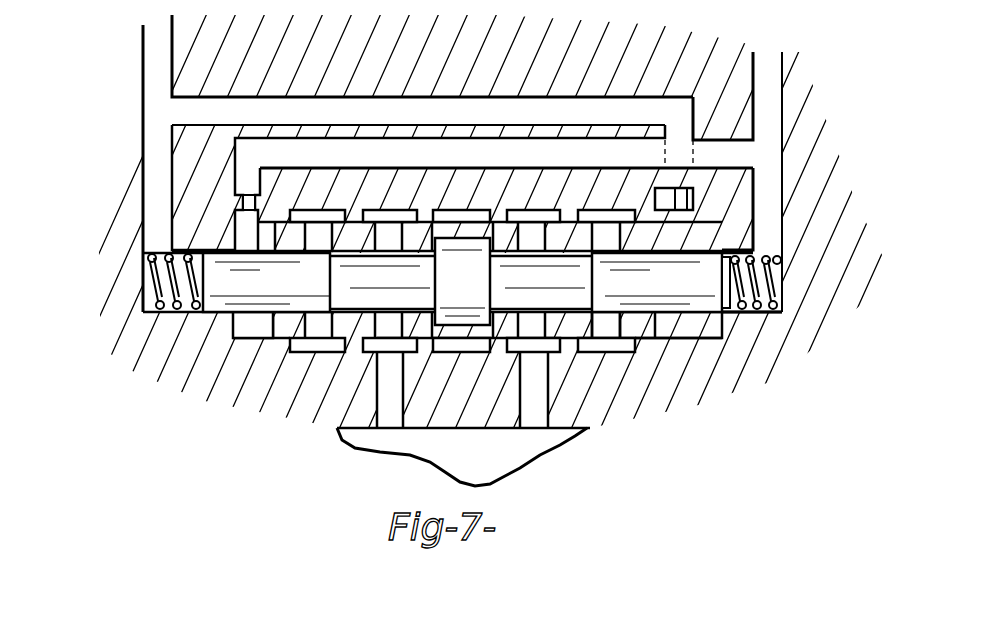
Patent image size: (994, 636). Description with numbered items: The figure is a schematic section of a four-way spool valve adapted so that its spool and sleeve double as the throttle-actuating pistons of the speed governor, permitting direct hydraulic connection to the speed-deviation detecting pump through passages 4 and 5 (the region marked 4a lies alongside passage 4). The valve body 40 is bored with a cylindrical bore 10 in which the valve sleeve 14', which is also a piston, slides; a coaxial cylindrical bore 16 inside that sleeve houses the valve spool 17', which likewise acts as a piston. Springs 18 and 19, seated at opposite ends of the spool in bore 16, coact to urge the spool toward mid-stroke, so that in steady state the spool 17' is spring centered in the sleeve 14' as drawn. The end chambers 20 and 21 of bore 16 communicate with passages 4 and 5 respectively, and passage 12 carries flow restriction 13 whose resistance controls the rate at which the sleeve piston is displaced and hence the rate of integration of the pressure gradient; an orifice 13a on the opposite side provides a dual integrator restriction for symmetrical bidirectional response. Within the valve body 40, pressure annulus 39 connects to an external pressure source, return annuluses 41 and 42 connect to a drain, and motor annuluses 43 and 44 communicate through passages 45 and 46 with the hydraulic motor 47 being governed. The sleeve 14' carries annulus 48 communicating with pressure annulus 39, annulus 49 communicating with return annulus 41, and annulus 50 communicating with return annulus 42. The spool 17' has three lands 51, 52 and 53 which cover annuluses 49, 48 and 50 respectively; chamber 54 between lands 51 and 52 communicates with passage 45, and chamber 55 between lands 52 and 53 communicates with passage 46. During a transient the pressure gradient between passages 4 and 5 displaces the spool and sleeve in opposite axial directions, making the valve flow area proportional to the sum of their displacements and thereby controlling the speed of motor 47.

The passage 4 is at (155, 50).
The housing top block 4a is at (497, 318).
The passage 5 is at (770, 82).
The cylindrical bore 10 is at (235, 340).
The passage 12 is at (630, 169).
The flow restriction 13 is at (243, 205).
The orifice 13a is at (690, 198).
The valve sleeve 14' is at (678, 345).
The cylindrical bore 16 is at (343, 428).
The valve spool 17' is at (754, 315).
The spring 18 is at (747, 312).
The spring 19 is at (140, 368).
The chamber 20 is at (782, 274).
The chamber 21 is at (140, 302).
The pressure annulus 39 is at (598, 97).
The valve body 40 is at (627, 196).
The return annulus 41 is at (430, 125).
The return annulus 42 is at (690, 92).
The motor annulus 43 is at (530, 108).
The motor annulus 44 is at (665, 62).
The passage 45 is at (392, 417).
The passage 46 is at (533, 408).
The hydraulic motor 47 is at (588, 430).
The annulus 48 is at (480, 343).
The annulus 49 is at (257, 335).
The annulus 50 is at (607, 325).
The land 51 is at (275, 292).
The land 52 is at (475, 292).
The land 53 is at (658, 292).
The chamber 54 is at (317, 343).
The chamber 55 is at (575, 345).